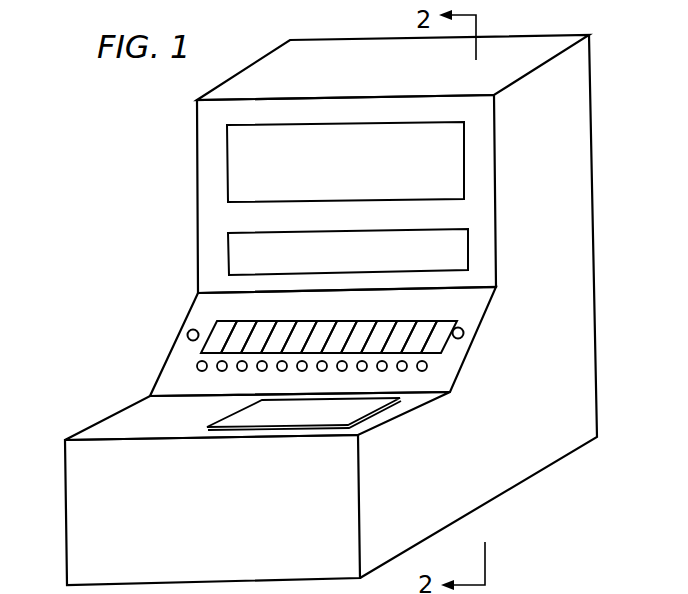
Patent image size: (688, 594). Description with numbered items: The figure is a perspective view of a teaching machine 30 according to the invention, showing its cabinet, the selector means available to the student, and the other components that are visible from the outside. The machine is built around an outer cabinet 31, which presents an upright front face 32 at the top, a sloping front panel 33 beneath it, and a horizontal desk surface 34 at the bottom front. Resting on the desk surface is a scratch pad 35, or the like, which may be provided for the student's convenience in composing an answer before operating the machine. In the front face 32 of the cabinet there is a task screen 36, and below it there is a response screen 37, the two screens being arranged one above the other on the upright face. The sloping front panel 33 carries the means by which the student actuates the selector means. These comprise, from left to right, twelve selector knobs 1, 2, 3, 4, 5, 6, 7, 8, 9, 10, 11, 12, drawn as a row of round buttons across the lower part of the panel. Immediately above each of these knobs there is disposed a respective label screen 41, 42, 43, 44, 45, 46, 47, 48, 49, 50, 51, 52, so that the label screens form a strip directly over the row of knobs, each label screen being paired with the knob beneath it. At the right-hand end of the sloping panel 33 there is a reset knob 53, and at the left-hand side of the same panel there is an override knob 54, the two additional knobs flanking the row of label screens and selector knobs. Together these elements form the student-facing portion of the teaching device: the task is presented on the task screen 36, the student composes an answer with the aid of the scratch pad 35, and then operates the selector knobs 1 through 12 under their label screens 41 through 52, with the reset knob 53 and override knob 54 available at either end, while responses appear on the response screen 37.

The teaching machine 30 is at (178, 182).
The outer cabinet 31 is at (67, 525).
The front face 32 is at (205, 263).
The sloping front panel 33 is at (175, 363).
The desk surface 34 is at (117, 421).
The scratch pad 35 is at (368, 415).
The task screen 36 is at (358, 172).
The response screen 37 is at (350, 262).
The label screen 41 is at (225, 320).
The label screen 42 is at (244, 320).
The label screen 43 is at (266, 320).
The label screen 44 is at (285, 320).
The label screen 45 is at (305, 320).
The label screen 46 is at (326, 320).
The label screen 47 is at (348, 320).
The label screen 48 is at (366, 320).
The label screen 49 is at (386, 320).
The label screen 50 is at (406, 320).
The label screen 51 is at (426, 320).
The label screen 52 is at (447, 320).
The reset knob 53 is at (465, 333).
The override knob 54 is at (186, 334).
The selector knob 1 is at (200, 371).
The selector knob 2 is at (220, 371).
The selector knob 3 is at (240, 371).
The selector knob 4 is at (260, 371).
The selector knob 5 is at (280, 371).
The selector knob 6 is at (300, 371).
The selector knob 7 is at (320, 371).
The selector knob 8 is at (340, 371).
The selector knob 9 is at (360, 371).
The selector knob 10 is at (380, 371).
The selector knob 11 is at (400, 371).
The selector knob 12 is at (420, 371).